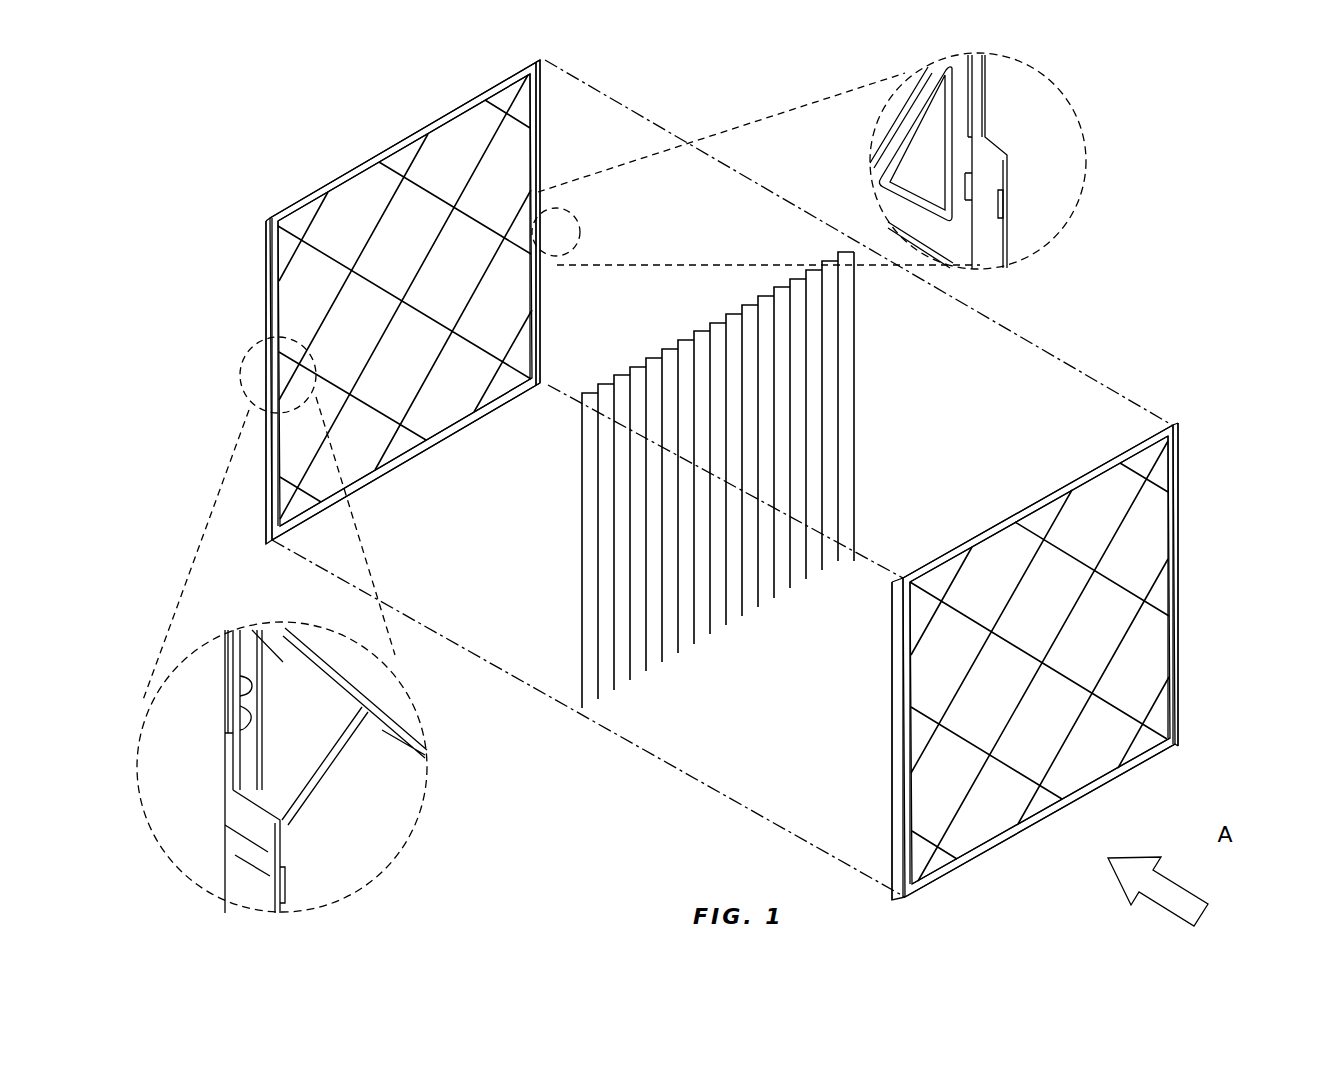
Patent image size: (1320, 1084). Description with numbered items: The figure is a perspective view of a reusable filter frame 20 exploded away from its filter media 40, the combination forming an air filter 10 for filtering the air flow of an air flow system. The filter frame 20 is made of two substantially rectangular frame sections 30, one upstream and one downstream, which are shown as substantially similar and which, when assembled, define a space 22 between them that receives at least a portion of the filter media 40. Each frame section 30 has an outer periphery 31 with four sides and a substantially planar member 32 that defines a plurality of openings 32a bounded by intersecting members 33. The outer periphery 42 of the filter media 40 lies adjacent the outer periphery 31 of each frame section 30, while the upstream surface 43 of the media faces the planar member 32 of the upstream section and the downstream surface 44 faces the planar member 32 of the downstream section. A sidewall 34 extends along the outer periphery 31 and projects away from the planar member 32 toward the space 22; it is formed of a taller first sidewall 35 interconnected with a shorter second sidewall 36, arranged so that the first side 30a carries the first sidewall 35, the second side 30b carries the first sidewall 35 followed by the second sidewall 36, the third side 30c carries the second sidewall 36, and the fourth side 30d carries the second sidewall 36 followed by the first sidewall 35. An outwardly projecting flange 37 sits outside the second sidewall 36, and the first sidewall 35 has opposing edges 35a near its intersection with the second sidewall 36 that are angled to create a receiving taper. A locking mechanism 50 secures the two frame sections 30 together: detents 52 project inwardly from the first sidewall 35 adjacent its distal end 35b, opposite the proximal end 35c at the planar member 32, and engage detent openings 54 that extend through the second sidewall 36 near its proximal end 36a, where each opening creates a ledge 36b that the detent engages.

The air filter 10 is at (1186, 183).
The filter frame 20 is at (313, 102).
The space 22 is at (597, 125).
The frame section 30 is at (558, 47).
The first side 30a is at (358, 147).
The second side 30b is at (216, 370).
The third side 30c is at (1060, 848).
The fourth side 30d is at (587, 245).
The outer periphery 31 is at (260, 253).
The planar member 32 is at (506, 150).
The openings 32a is at (492, 187).
The intersecting members 33 is at (445, 437).
The sidewall 34 is at (381, 501).
The first sidewall 35 is at (553, 320).
The opposing edges 35a is at (1000, 142).
The distal end 35b is at (1011, 162).
The proximal end 35c is at (231, 832).
The second sidewall 36 is at (300, 196).
The proximal end 36a is at (226, 686).
The ledge 36b is at (931, 76).
The flange 37 is at (231, 662).
The filter media 40 is at (932, 370).
The outer periphery 42 is at (797, 252).
The upstream surface 43 is at (751, 600).
The downstream surface 44 is at (665, 346).
The locking mechanism 50 is at (1027, 80).
The detent 52 is at (1010, 201).
The detent opening 54 is at (948, 93).